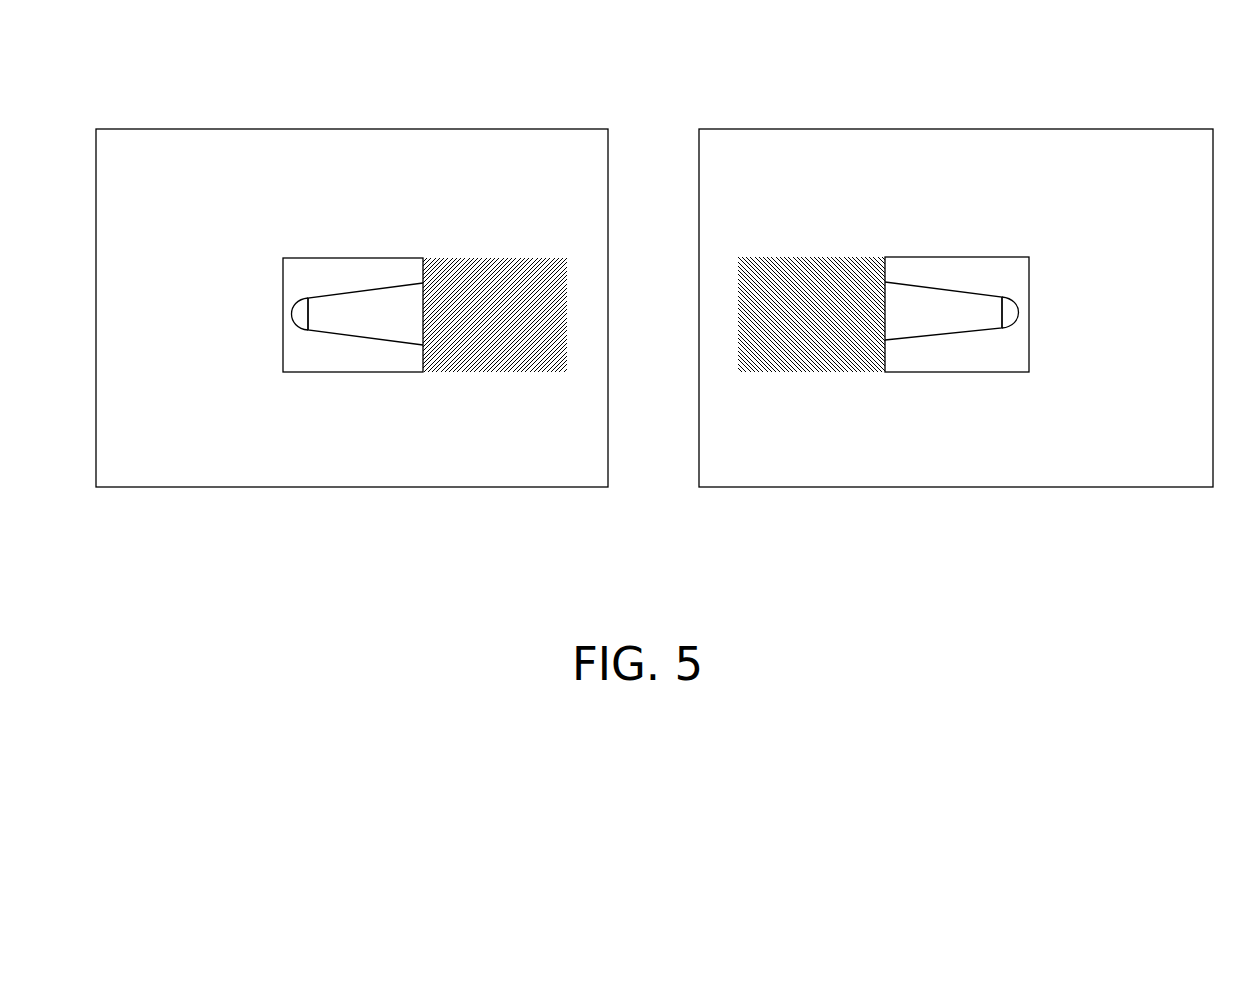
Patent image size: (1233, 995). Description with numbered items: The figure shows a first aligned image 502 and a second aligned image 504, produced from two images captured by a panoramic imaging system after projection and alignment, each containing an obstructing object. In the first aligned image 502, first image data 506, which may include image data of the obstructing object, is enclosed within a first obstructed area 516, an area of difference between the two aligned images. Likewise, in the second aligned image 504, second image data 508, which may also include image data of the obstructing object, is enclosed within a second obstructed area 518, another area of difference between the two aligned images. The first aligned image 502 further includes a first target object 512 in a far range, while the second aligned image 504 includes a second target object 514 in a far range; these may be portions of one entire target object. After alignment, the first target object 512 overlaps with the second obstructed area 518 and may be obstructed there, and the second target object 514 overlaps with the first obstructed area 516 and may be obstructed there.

The first aligned image 502 is at (222, 140).
The second aligned image 504 is at (1070, 143).
The first image data 506 is at (367, 290).
The second image data 508 is at (938, 290).
The first target object 512 is at (495, 315).
The second target object 514 is at (811, 314).
The first obstructed area 516 is at (329, 349).
The second obstructed area 518 is at (980, 355).